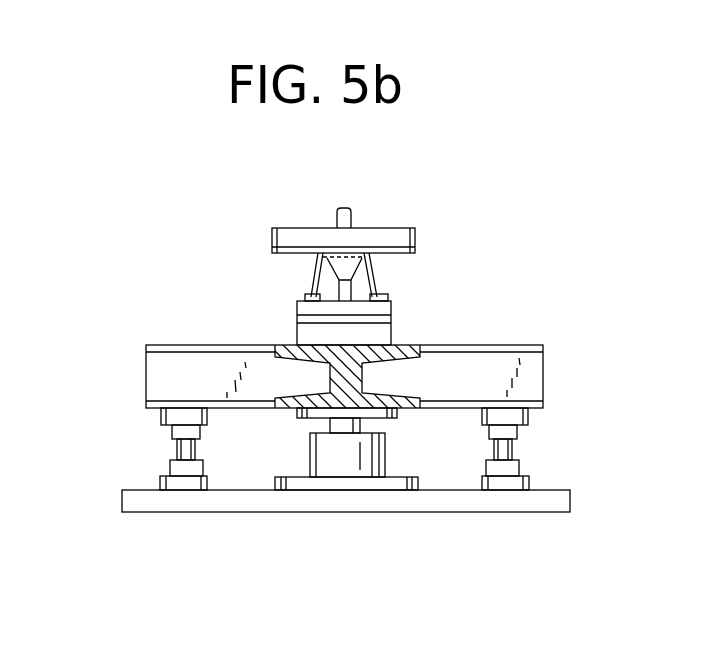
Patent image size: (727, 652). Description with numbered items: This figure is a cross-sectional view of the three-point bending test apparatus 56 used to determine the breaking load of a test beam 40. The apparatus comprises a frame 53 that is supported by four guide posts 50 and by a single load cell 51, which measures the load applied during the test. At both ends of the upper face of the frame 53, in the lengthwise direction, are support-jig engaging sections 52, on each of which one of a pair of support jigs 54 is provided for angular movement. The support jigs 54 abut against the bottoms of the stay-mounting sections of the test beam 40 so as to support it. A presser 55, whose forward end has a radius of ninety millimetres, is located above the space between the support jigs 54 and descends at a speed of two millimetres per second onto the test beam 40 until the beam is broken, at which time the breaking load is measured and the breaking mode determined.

The test beam 40 is at (315, 277).
The guide post 50 is at (176, 450).
The load cell 51 is at (390, 456).
The support-jig engaging section 52 is at (393, 328).
The frame 53 is at (162, 375).
The support jig 54 is at (358, 288).
The presser 55 is at (393, 226).
The three-point bending test apparatus 56 is at (250, 236).